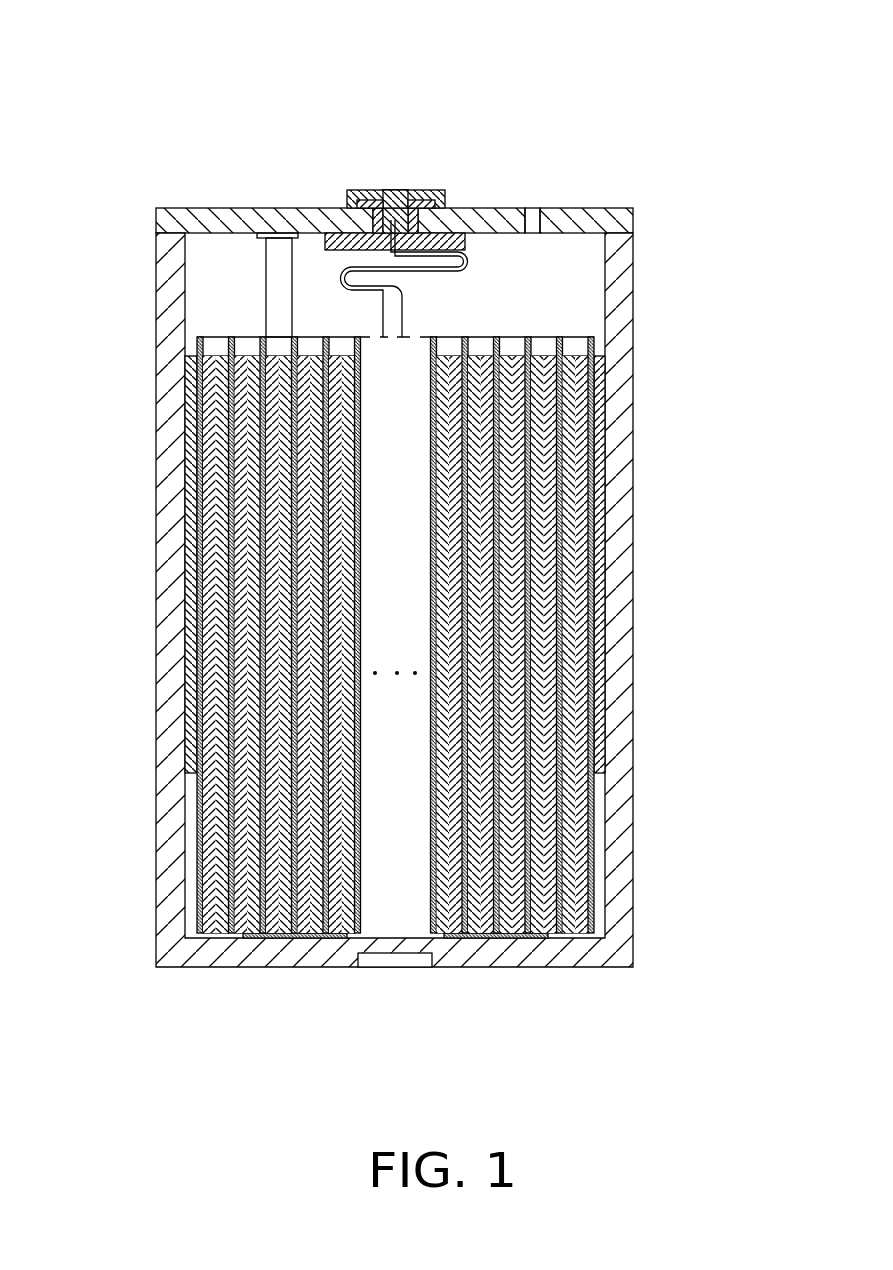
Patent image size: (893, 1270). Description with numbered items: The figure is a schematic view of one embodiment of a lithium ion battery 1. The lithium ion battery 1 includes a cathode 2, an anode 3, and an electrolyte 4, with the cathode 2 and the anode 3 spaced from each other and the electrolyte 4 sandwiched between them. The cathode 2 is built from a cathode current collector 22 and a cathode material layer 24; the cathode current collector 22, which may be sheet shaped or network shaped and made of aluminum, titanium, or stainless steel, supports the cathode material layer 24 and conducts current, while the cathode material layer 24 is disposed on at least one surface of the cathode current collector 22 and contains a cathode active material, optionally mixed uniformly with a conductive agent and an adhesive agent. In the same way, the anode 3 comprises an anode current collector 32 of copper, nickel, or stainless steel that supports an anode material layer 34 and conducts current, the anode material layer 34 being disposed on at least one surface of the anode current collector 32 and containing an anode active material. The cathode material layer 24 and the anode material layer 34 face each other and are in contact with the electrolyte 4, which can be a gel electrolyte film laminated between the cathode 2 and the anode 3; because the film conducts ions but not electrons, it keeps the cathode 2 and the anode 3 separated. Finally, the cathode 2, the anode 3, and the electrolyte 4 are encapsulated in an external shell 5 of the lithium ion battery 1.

The lithium ion battery 1 is at (375, 40).
The cathode 2 is at (594, 635).
The cathode current collector 22 is at (577, 633).
The cathode material layer 24 is at (580, 701).
The anode 3 is at (201, 635).
The anode current collector 32 is at (232, 630).
The anode material layer 34 is at (240, 697).
The electrolyte 4 is at (230, 817).
The external shell 5 is at (173, 310).